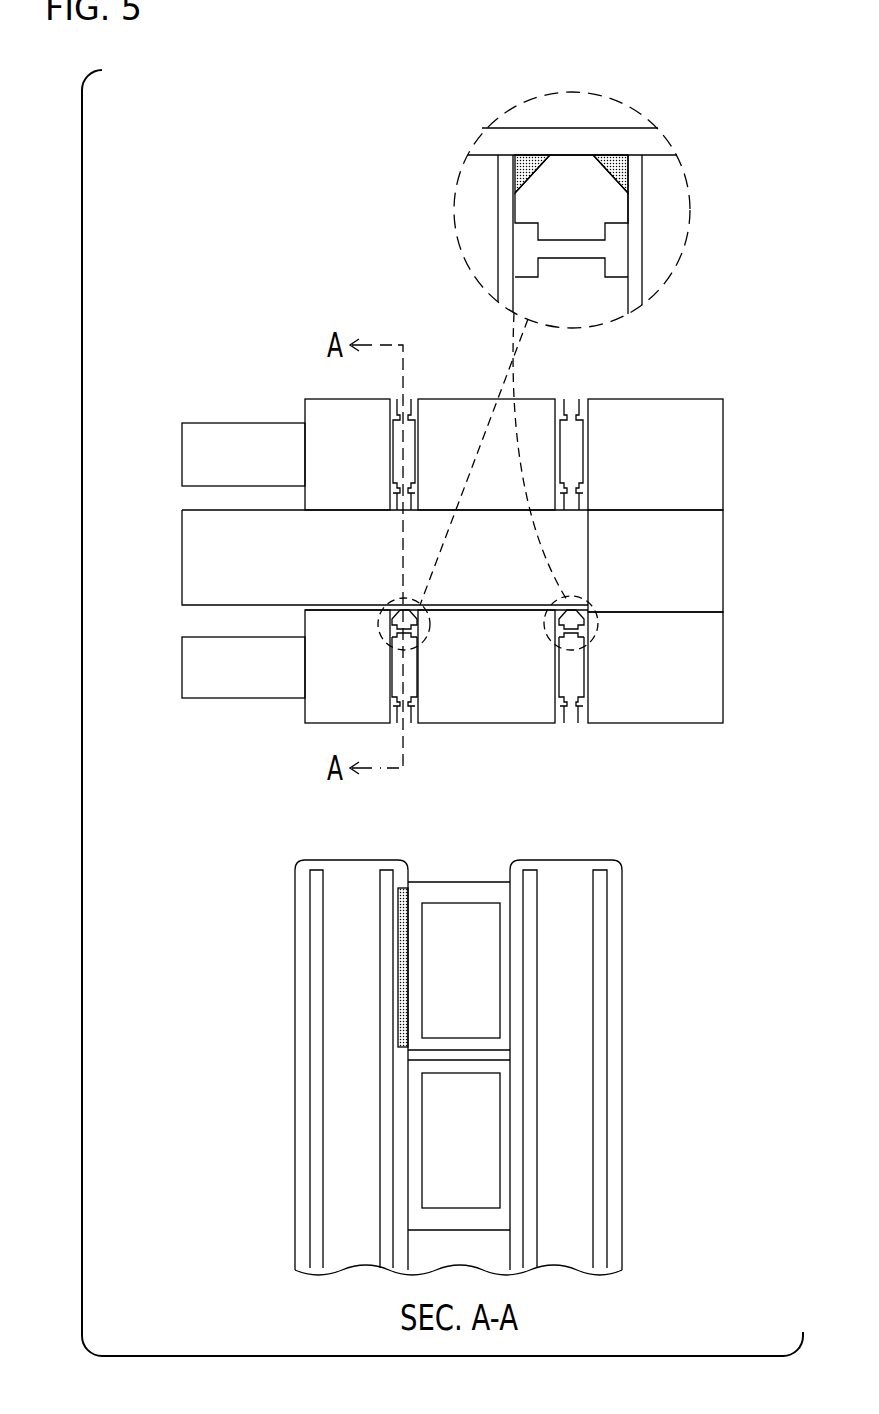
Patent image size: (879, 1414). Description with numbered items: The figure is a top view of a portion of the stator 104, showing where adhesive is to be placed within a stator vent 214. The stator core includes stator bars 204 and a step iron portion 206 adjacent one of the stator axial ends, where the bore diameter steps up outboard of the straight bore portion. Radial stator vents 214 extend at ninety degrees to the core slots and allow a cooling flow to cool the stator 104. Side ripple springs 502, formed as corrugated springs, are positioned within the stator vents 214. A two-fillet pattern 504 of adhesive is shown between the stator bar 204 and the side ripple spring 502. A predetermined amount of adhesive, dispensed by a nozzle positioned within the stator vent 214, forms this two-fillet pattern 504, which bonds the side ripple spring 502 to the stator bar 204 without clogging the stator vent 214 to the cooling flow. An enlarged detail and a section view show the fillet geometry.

The stator 104 is at (238, 388).
The stator bar 204 is at (203, 563).
The step iron portion 206 is at (460, 425).
The stator vent 214 is at (402, 458).
The side ripple spring 502 is at (300, 609).
The two-fillet pattern 504 is at (613, 167).